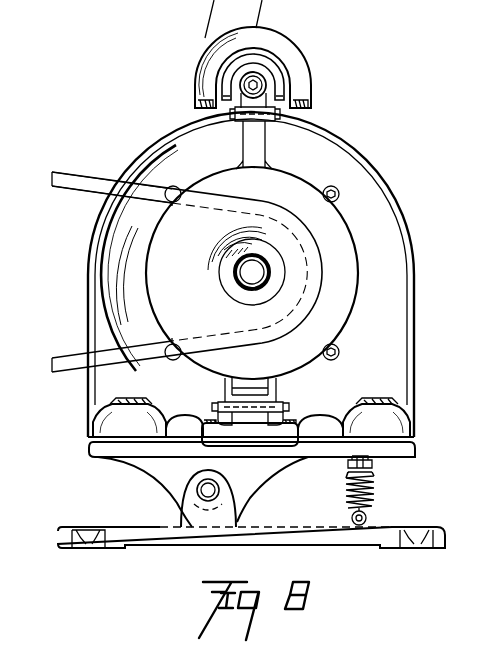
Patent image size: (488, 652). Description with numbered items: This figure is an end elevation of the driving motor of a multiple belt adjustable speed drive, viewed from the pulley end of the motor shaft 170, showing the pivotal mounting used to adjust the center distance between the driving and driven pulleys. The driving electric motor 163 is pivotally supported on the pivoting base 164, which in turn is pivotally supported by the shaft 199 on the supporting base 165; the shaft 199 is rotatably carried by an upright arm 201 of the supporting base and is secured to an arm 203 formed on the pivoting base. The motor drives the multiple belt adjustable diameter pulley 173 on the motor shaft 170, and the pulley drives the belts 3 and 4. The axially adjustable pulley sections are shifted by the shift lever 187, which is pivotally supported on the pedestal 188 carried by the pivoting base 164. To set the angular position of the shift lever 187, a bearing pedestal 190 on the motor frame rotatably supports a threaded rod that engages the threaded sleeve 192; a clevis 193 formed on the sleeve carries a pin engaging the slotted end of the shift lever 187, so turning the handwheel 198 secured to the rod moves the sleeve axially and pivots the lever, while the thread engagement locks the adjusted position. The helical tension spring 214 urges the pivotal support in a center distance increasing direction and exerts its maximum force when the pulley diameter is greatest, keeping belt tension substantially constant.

The belt 3 is at (56, 172).
The belt 4 is at (108, 183).
The driving electric motor 163 is at (358, 136).
The pivoting base 164 is at (89, 447).
The supporting base 165 is at (82, 527).
The motor shaft 170 is at (237, 273).
The multiple belt adjustable diameter pulley 173 is at (354, 272).
The shift lever 187 is at (243, 147).
The pedestal 188 is at (222, 432).
The bearing pedestal 190 is at (222, 92).
The threaded sleeve 192 is at (240, 79).
The clevis 193 is at (268, 125).
The handwheel 198 is at (311, 70).
The shaft 199 is at (196, 493).
The upright arm 201 is at (244, 514).
The arm 203 is at (268, 471).
The helical tension spring 214 is at (378, 474).